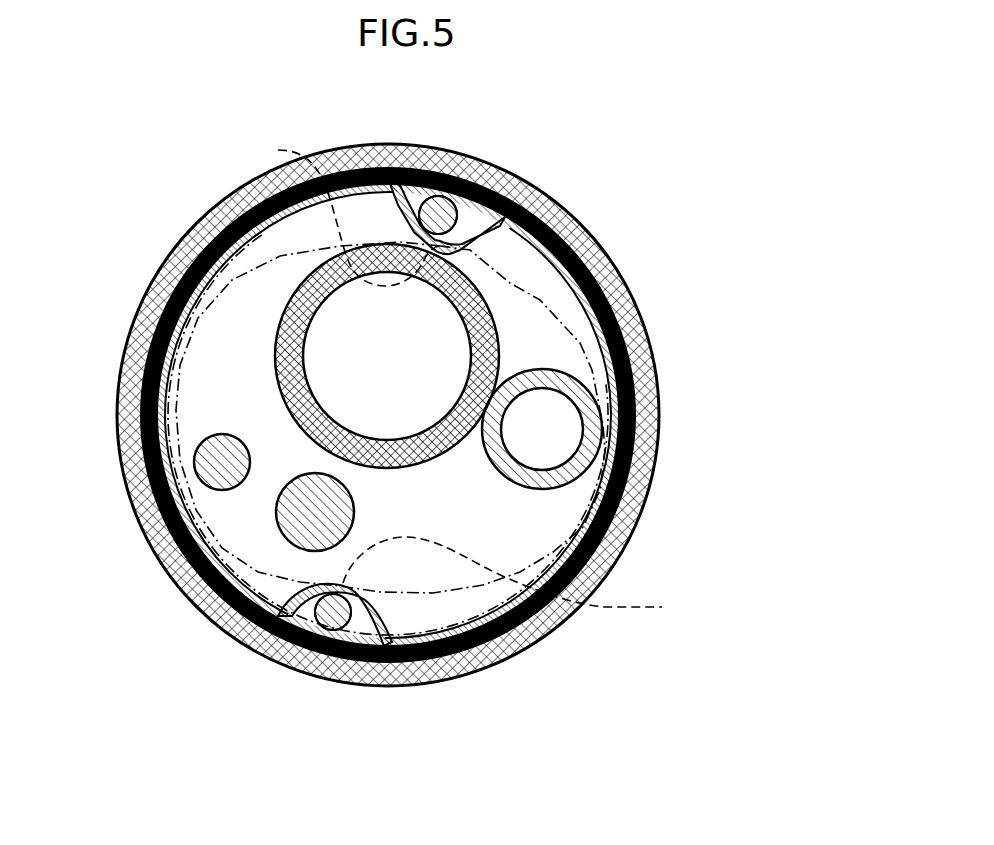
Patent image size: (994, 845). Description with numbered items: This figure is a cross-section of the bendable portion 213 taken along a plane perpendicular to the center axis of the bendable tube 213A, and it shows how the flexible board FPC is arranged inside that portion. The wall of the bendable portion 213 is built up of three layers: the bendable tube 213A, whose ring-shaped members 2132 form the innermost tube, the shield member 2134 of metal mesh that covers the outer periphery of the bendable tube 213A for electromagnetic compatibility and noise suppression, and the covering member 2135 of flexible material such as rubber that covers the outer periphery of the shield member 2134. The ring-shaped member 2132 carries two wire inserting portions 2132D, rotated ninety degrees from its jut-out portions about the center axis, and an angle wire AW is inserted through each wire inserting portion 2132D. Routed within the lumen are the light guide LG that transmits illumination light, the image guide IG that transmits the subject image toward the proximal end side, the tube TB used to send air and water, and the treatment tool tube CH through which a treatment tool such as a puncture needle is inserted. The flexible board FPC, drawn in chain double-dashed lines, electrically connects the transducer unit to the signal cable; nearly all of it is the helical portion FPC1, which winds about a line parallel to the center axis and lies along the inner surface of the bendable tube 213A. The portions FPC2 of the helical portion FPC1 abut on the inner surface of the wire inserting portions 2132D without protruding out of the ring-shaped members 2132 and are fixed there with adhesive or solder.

The bendable portion 213 is at (388, 469).
The covering member 2135 is at (381, 672).
The shield member 2134 is at (448, 650).
The ring-shaped member 2132 is at (388, 467).
The bendable tube 213A is at (516, 606).
The wire inserting portion 2132D is at (488, 228).
The angle wire AW is at (440, 212).
The treatment tool tube CH is at (386, 258).
The tube TB is at (583, 427).
The light guide LG is at (220, 465).
The image guide IG is at (313, 512).
The flexible board FPC is at (485, 435).
The helical portion FPC1 is at (580, 343).
The portion of the helical portion FPC2 is at (467, 377).